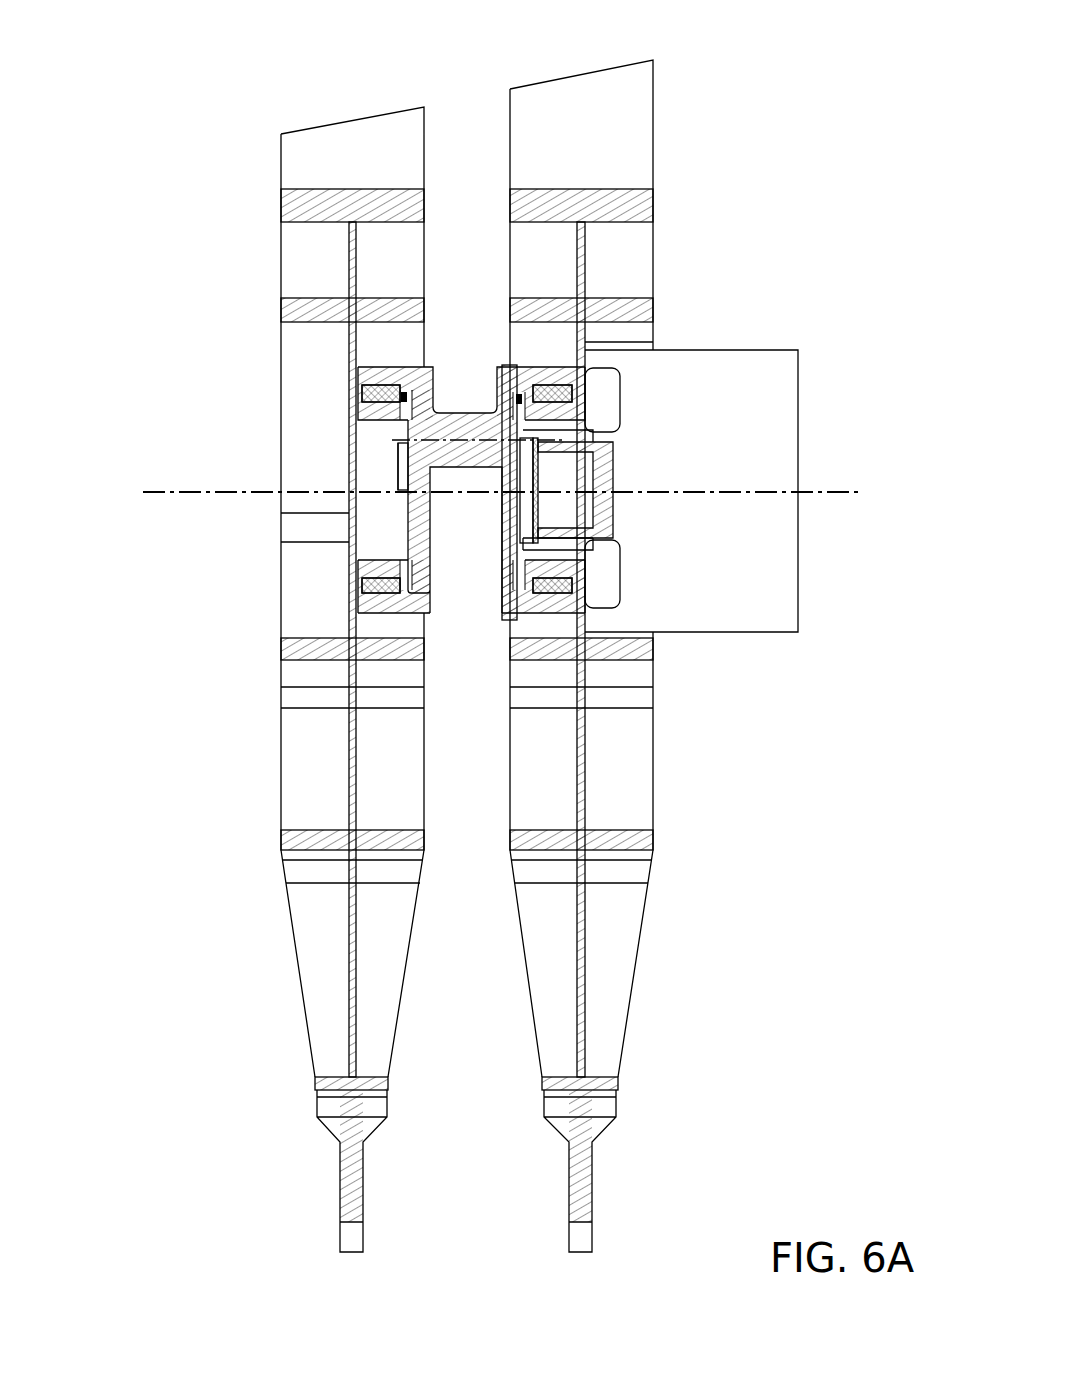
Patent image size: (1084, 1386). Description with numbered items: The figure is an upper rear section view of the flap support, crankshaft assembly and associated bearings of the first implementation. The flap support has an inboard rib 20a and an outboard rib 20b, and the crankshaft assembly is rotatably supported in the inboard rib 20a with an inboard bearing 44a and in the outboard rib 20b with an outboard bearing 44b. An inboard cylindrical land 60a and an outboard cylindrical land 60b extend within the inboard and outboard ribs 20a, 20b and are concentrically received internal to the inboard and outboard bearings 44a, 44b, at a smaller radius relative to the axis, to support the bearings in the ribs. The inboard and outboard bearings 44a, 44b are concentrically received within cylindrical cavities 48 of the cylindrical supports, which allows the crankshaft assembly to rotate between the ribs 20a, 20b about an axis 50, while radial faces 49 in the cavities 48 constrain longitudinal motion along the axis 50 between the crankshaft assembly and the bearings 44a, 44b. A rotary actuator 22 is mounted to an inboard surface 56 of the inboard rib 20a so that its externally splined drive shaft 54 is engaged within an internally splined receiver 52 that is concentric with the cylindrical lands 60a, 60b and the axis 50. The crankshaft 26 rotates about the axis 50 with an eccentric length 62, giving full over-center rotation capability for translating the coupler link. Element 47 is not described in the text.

The inboard rib 20a is at (623, 137).
The outboard rib 20b is at (343, 152).
The rotary actuator 22 is at (728, 403).
The crankshaft 26 is at (462, 430).
The inboard bearing 44a is at (557, 393).
The outboard bearing 44b is at (377, 388).
The retaining ring 47 is at (400, 388).
The cylindrical cavities 48 is at (387, 523).
The radial faces 49 is at (397, 592).
The axis 50 is at (227, 493).
The receiver 52 is at (565, 543).
The drive shaft 54 is at (567, 527).
The inboard surface 56 is at (600, 342).
The inboard cylindrical land 60a is at (573, 412).
The outboard cylindrical land 60b is at (370, 425).
The eccentric length 62 is at (397, 473).